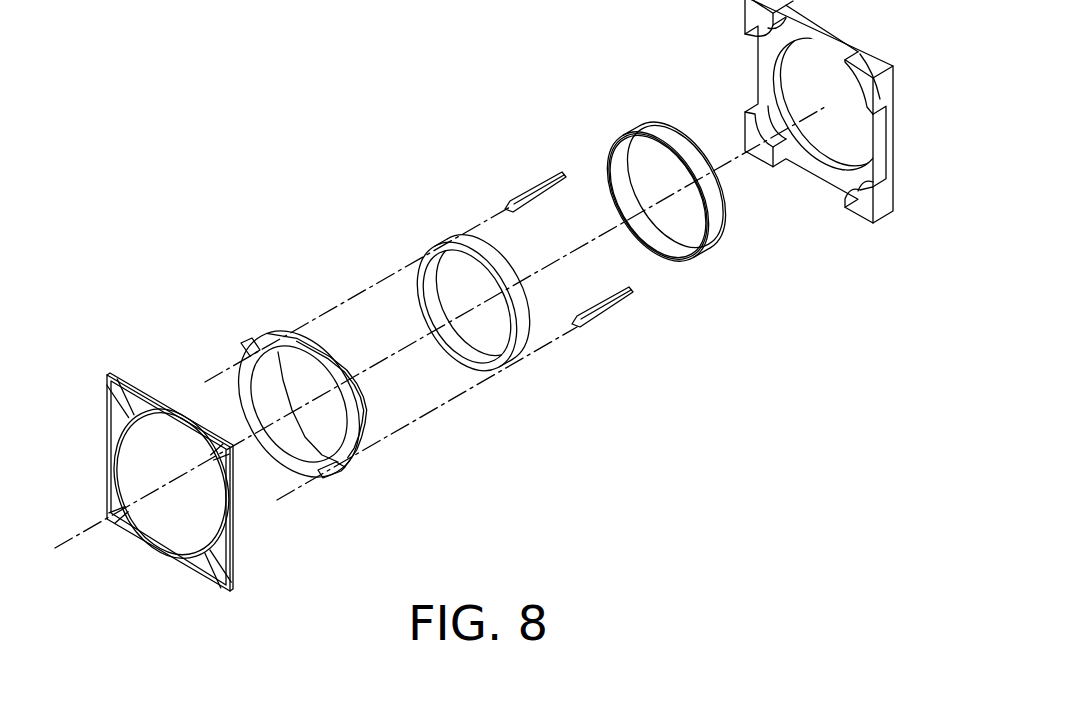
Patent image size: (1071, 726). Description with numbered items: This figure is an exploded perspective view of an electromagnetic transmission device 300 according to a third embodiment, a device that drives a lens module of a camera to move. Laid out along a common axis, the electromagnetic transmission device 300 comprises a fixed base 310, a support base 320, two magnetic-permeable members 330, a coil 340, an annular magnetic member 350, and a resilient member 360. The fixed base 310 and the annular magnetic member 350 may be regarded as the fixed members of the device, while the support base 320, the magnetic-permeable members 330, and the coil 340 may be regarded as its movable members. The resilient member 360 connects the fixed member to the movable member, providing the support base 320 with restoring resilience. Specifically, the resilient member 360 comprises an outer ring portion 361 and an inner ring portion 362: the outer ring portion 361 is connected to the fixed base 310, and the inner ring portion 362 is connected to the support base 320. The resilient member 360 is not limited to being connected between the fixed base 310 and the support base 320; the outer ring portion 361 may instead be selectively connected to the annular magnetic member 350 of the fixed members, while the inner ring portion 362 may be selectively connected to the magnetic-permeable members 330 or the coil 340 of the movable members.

The electromagnetic transmission device 300 is at (103, 72).
The fixed base 310 is at (810, 168).
The support base 320 is at (275, 342).
The magnetic-permeable members 330 is at (537, 184).
The coil 340 is at (496, 377).
The annular magnetic member 350 is at (686, 262).
The resilient member 360 is at (122, 384).
The outer ring portion 361 is at (108, 396).
The inner ring portion 362 is at (112, 462).